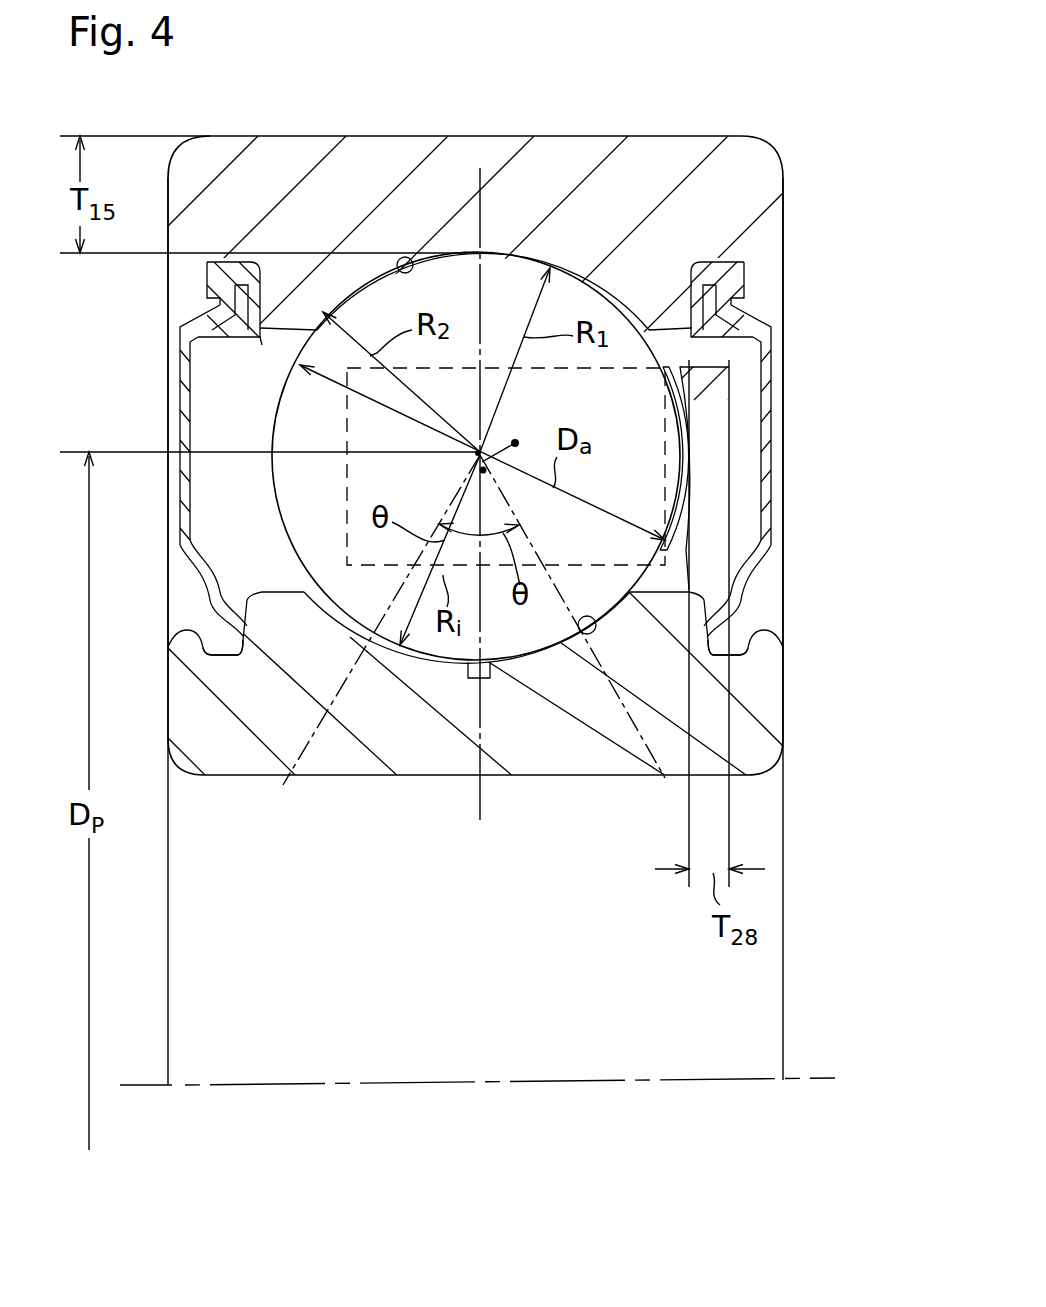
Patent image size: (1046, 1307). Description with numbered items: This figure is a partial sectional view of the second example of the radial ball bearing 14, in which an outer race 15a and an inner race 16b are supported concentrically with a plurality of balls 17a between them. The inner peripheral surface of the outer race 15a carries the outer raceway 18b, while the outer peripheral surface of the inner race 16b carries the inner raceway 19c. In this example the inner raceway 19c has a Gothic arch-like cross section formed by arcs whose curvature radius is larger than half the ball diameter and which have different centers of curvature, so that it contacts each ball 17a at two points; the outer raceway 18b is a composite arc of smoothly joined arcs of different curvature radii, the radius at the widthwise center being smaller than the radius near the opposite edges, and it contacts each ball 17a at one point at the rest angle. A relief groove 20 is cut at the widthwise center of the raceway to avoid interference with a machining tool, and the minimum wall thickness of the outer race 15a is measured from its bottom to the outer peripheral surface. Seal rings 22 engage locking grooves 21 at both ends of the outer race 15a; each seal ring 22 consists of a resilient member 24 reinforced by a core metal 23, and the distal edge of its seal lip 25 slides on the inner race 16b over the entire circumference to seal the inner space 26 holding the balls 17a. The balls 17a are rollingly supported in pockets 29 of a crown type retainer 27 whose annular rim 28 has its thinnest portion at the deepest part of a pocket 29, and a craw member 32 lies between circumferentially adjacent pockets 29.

The radial ball bearing 14 is at (617, 120).
The outer race 15a is at (533, 185).
The inner race 16b is at (452, 758).
The ball 17a is at (300, 422).
The outer raceway 18b is at (412, 252).
The inner raceway 19c is at (578, 635).
The relief groove 20 is at (490, 668).
The locking groove 21 is at (207, 287).
The seal ring 22 is at (185, 548).
The core metal 23 is at (212, 575).
The resilient member 24 is at (236, 302).
The seal lip 25 is at (228, 641).
The inner space 26 is at (232, 392).
The retainer 27 is at (715, 540).
The annular rim 28 is at (718, 459).
The pocket 29 is at (685, 455).
The craw member 32 is at (367, 492).